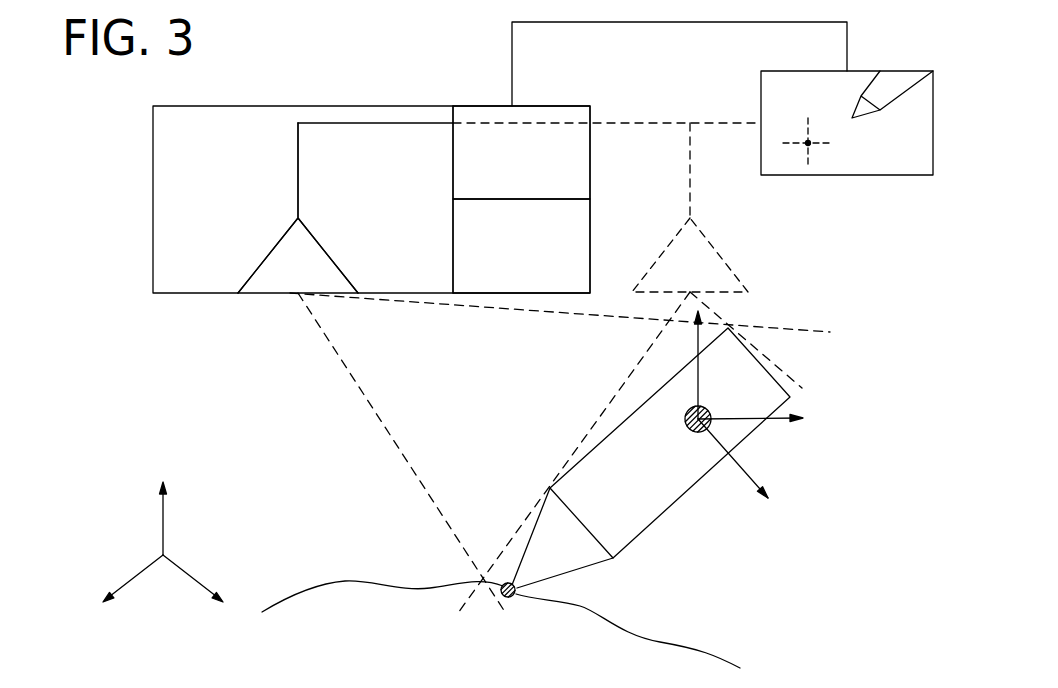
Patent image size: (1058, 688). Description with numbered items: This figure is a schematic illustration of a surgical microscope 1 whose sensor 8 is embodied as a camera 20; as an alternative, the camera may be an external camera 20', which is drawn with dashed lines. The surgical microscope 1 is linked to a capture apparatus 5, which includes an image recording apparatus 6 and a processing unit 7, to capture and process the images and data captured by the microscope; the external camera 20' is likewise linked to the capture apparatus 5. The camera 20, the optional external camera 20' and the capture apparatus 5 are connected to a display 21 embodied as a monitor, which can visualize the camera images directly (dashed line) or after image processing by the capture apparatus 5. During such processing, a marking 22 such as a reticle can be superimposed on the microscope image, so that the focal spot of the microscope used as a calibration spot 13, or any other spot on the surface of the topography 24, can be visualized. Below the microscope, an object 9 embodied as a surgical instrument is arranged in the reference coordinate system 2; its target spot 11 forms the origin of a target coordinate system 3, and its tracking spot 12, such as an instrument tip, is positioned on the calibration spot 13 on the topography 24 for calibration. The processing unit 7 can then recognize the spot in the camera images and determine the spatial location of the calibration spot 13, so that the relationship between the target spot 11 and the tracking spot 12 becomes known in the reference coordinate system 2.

The surgical microscope 1 is at (143, 160).
The reference coordinate system 2 is at (148, 543).
The target coordinate system 3 is at (750, 413).
The capture apparatus 5 is at (545, 102).
The image recording apparatus 6 is at (558, 240).
The processing unit 7 is at (550, 152).
The sensor 8 is at (265, 255).
The object 9 is at (742, 432).
The target spot 11 is at (698, 432).
The tracking spot 12 is at (517, 590).
The calibration spot 13 is at (492, 597).
The camera 20 is at (229, 208).
The external camera 20' is at (637, 368).
The display 21 is at (900, 145).
The marking 22 is at (810, 145).
The topography 24 is at (335, 585).